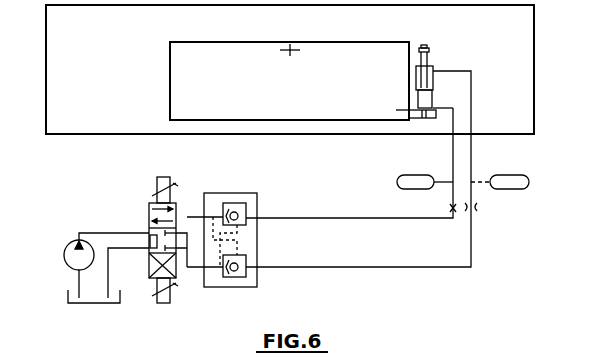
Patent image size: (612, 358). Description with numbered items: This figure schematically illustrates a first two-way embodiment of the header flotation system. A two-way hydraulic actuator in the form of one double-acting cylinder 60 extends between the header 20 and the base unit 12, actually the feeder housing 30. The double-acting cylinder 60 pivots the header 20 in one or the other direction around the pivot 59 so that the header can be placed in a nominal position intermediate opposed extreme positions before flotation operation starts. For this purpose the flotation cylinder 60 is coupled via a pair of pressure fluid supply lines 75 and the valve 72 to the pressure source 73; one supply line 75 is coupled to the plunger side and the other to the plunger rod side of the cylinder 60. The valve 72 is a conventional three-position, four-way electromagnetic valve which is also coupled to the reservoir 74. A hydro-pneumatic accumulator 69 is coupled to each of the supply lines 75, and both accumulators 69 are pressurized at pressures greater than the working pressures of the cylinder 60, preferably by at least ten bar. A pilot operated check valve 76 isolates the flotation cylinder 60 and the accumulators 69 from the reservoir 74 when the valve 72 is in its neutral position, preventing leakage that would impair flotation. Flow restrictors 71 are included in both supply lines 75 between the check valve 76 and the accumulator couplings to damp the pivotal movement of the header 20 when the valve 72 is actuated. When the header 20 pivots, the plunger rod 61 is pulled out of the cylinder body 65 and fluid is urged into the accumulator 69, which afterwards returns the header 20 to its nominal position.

The header 20 is at (534, 60).
The feeder housing 30 is at (170, 85).
The base unit 12 is at (170, 110).
The pivot 59 is at (292, 53).
The double-acting cylinder 60 is at (471, 71).
The plunger rod 61 is at (431, 56).
The cylinder body 65 is at (437, 80).
The hydro-pneumatic accumulator 69 is at (397, 180).
The flow restrictors 71 is at (450, 208).
The pressure fluid supply lines 75 is at (376, 218).
The pilot operated check valve 76 is at (257, 205).
The valve 72 is at (165, 305).
The pressure source 73 is at (67, 247).
The reservoir 74 is at (93, 305).